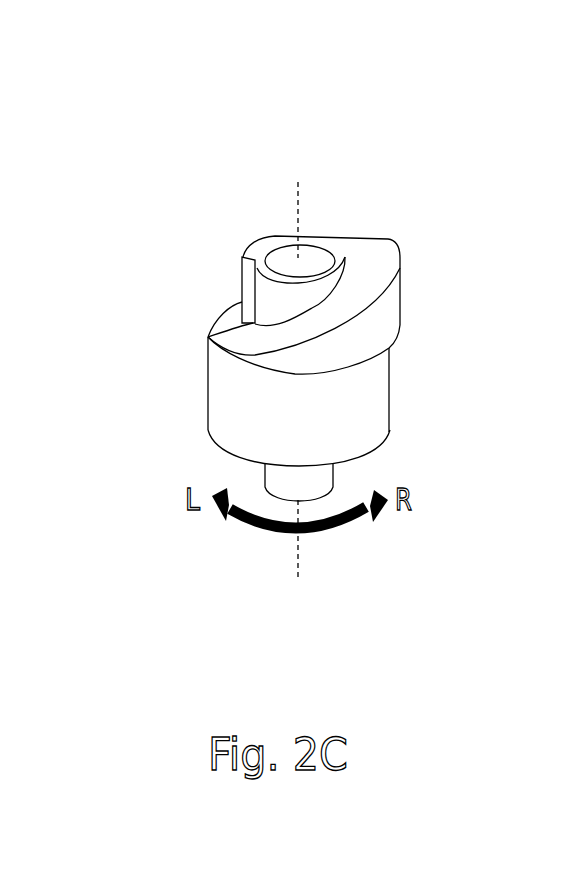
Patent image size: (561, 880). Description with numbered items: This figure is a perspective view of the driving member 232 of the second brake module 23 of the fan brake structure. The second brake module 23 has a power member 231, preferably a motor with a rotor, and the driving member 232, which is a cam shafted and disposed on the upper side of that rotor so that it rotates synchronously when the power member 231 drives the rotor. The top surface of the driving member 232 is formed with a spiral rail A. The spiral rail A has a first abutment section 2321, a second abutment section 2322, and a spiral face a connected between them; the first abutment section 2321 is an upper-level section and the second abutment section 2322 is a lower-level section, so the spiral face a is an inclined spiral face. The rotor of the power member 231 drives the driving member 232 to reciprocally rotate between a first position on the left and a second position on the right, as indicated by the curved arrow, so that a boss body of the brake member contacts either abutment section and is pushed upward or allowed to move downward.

The second brake module 23 is at (321, 358).
The power member 231 is at (373, 388).
The driving member 232 is at (294, 295).
The first abutment section 2321 is at (380, 248).
The second abutment section 2322 is at (230, 340).
The spiral face a is at (306, 326).
The spiral rail A is at (505, 147).